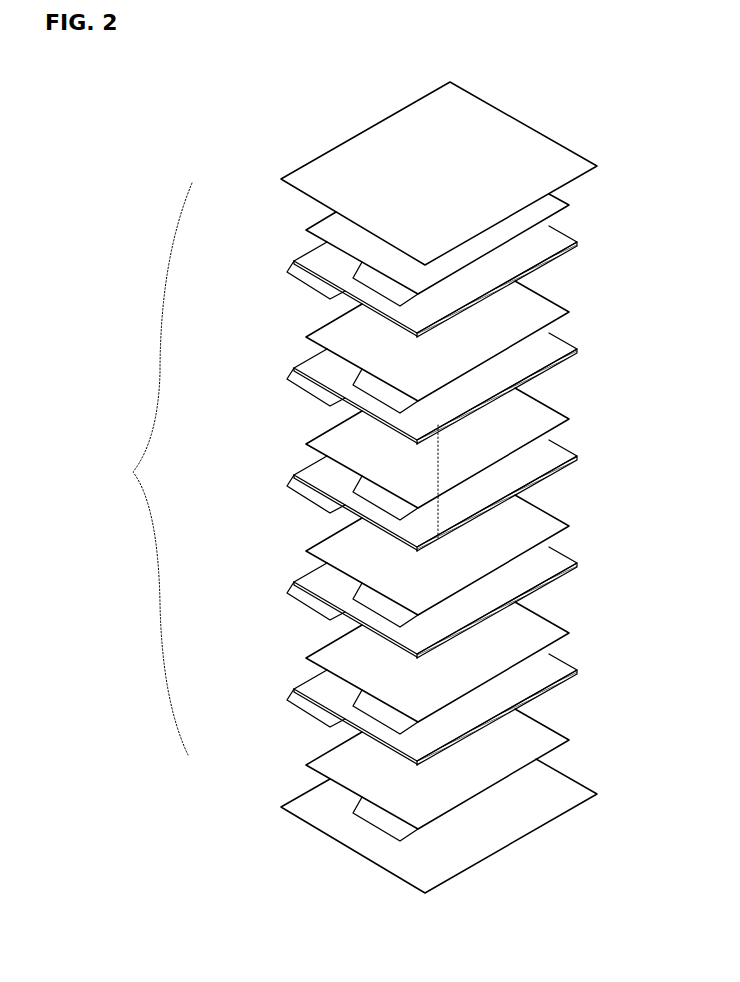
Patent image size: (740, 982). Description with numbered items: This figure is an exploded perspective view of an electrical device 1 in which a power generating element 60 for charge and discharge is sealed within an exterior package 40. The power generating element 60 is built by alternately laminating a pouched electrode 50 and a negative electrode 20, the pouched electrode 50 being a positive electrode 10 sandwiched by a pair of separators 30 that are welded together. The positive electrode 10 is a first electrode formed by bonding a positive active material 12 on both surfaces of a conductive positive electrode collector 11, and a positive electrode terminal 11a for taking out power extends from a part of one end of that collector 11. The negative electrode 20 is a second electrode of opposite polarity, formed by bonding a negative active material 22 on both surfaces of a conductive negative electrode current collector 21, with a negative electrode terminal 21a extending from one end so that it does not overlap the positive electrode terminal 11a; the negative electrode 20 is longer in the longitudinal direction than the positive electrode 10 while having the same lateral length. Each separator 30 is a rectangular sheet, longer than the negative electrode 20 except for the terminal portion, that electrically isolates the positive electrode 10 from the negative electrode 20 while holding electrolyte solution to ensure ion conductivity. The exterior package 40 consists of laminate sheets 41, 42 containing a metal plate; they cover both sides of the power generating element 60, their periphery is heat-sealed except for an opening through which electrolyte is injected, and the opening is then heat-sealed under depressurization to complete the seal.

The electrical device 1 is at (94, 94).
The positive electrode 10 is at (281, 390).
The positive electrode collector 11 is at (290, 396).
The positive electrode terminal 11a is at (328, 400).
The positive active material 12 is at (348, 403).
The negative electrode 20 is at (300, 228).
The negative electrode current collector 21 is at (395, 420).
The negative electrode terminal 21a is at (372, 402).
The negative active material 22 is at (566, 314).
The separator 30 is at (581, 345).
The exterior package 40 is at (282, 182).
The laminate sheet 41 is at (576, 153).
The laminate sheet 42 is at (575, 807).
The pouched electrode 50 is at (253, 256).
The power generating element 60 is at (149, 469).